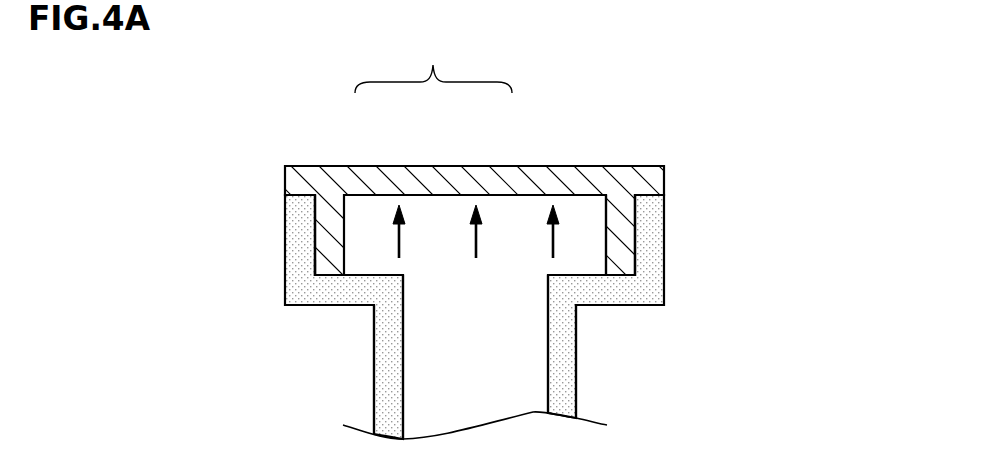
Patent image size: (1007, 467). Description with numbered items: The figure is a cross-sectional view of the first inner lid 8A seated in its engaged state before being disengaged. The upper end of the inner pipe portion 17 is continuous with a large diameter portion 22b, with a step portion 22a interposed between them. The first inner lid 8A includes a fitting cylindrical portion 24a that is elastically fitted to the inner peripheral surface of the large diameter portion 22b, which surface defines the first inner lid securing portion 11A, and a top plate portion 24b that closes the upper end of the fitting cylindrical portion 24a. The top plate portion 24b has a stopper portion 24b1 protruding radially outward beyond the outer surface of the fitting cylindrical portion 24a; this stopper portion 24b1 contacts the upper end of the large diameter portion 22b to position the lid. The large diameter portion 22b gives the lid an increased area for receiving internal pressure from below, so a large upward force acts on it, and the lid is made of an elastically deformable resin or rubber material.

The first inner lid 8A is at (433, 66).
The fitting cylindrical portion 24a is at (345, 222).
The top plate portion 24b is at (484, 166).
The stopper portion 24b1 is at (652, 180).
The large diameter portion 22b is at (285, 215).
The first inner lid securing portion 11A is at (320, 256).
The step portion 22a is at (316, 306).
The inner pipe portion 17 is at (577, 363).